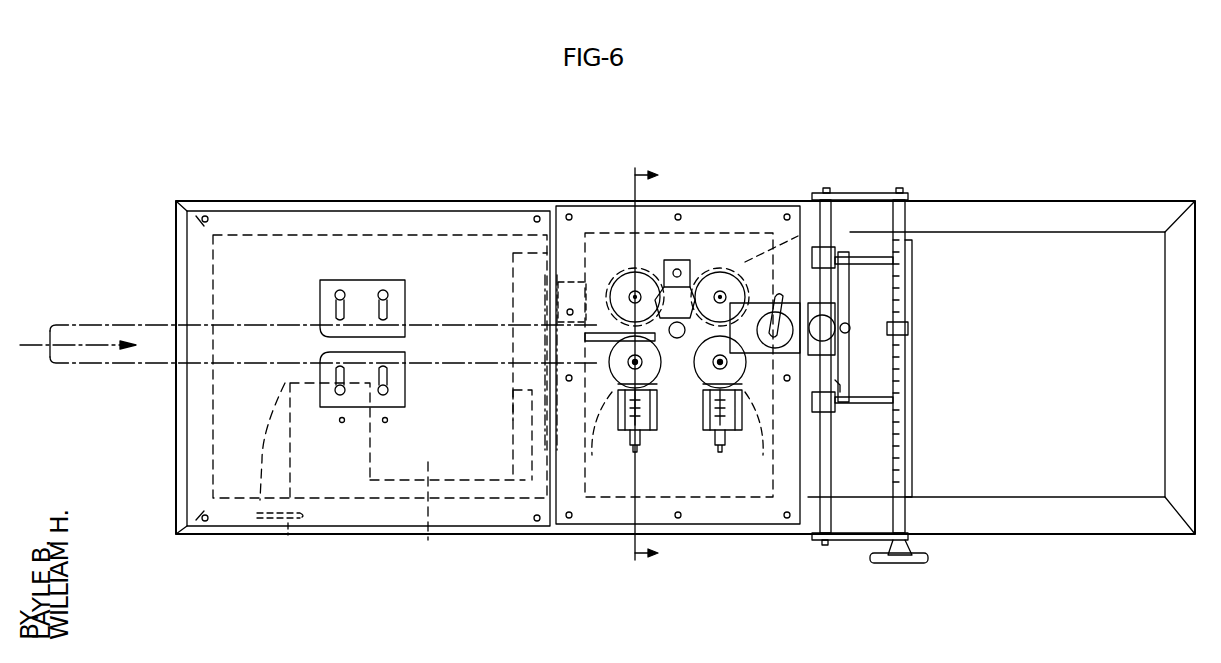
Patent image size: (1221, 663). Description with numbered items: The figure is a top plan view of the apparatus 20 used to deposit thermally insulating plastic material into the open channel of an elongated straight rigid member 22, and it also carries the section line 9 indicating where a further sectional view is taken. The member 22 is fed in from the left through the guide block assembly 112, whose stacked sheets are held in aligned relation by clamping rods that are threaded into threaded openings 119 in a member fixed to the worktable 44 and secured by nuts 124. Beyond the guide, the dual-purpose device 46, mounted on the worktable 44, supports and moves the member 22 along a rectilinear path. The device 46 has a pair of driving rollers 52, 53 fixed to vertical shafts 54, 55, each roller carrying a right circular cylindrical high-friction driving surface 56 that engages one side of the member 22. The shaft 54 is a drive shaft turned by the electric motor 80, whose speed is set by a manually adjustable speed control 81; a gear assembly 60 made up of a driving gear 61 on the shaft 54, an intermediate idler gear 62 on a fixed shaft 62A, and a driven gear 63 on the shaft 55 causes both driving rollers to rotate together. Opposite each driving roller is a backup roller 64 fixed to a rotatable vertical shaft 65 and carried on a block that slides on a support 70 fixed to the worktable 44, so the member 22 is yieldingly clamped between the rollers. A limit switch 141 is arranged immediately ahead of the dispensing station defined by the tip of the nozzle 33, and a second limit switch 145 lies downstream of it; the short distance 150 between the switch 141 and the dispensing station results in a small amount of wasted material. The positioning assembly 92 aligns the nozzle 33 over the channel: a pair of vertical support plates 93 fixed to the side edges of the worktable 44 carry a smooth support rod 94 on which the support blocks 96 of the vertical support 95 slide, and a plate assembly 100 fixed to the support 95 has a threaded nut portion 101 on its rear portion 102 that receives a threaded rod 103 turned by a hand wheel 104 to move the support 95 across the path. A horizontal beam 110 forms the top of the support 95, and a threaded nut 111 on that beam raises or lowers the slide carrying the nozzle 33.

The apparatus 20 is at (847, 140).
The elongated straight rigid member 22 is at (255, 323).
The guide block assembly 112 is at (368, 263).
The nut 124 is at (386, 292).
The threaded opening 119 is at (385, 423).
The manually adjustable speed control 81 is at (288, 536).
The electric motor 80 is at (435, 516).
The vertical shaft 54 is at (630, 296).
The limit switch 141 is at (590, 337).
The high-friction driving surface 56 is at (607, 273).
The driving roller 52 is at (620, 278).
The driving gear 61 is at (627, 272).
The section line 9- 9 is at (655, 364).
The intermediate idler gear 62 is at (667, 245).
The fixed shaft 62A is at (678, 271).
The gear assembly 60 is at (697, 244).
The short distance 150 is at (721, 291).
The dual-purpose device 46 is at (735, 254).
The driving roller 53 is at (745, 258).
The vertical shaft 55 is at (795, 226).
The limit switch 145 is at (678, 338).
The nozzle 33 is at (650, 340).
The rotatable vertical shaft 65 is at (720, 369).
The support 70 is at (620, 432).
The backup roller 64 is at (600, 437).
The horizontal beam 110 is at (848, 336).
The threaded nut 111 is at (850, 328).
The vertical support plates 93 is at (910, 193).
The smooth support rod 94 is at (831, 475).
The driven gear 63 is at (826, 216).
The positioning assembly 92 is at (865, 233).
The threaded rod 103 is at (906, 470).
The support blocks 96 is at (835, 255).
The rear portion 102 is at (877, 300).
The threaded nut portion 101 is at (905, 330).
The vertical support 95 is at (845, 410).
The plate assembly 100 is at (877, 408).
The hand wheel 104 is at (922, 565).
The worktable 44 is at (767, 515).